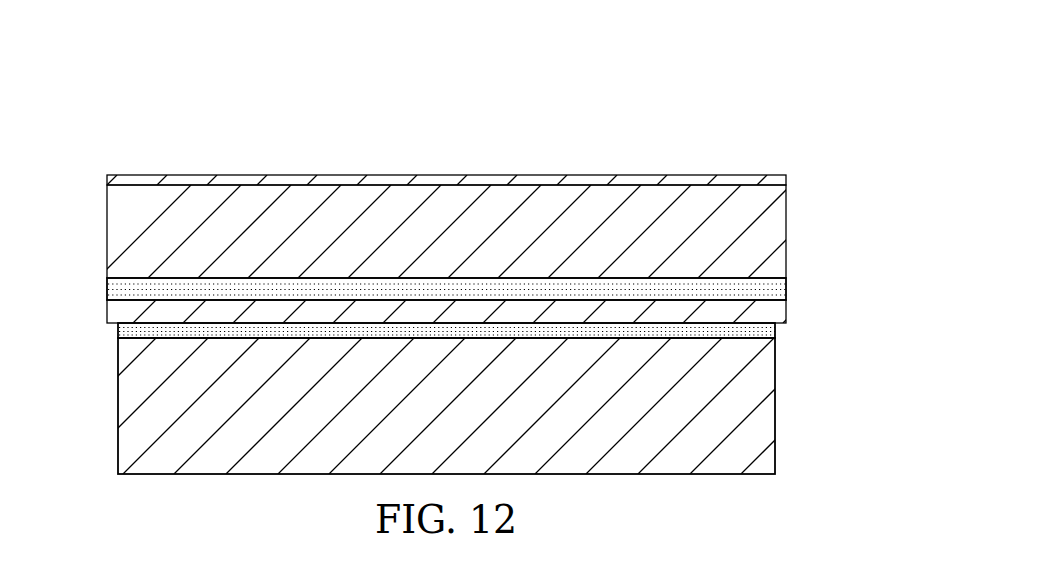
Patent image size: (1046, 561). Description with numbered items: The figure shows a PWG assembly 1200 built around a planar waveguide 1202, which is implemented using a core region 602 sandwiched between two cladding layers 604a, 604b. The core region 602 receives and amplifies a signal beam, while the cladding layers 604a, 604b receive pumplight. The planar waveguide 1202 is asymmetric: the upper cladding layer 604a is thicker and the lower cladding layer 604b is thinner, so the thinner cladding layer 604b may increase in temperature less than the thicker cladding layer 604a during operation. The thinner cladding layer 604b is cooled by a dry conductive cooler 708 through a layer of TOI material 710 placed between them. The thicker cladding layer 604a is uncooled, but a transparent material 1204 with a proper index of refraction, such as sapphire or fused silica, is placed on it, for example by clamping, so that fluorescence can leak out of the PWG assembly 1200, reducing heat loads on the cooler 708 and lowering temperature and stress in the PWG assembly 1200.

The PWG assembly 1200 is at (658, 91).
The planar waveguide 1202 is at (808, 283).
The transparent material 1204 is at (240, 175).
The thicker cladding layer 604a is at (115, 236).
The core region 602 is at (115, 288).
The thinner cladding layer 604b is at (778, 310).
The TOI material 710 is at (127, 330).
The dry conductive cooler 708 is at (127, 410).